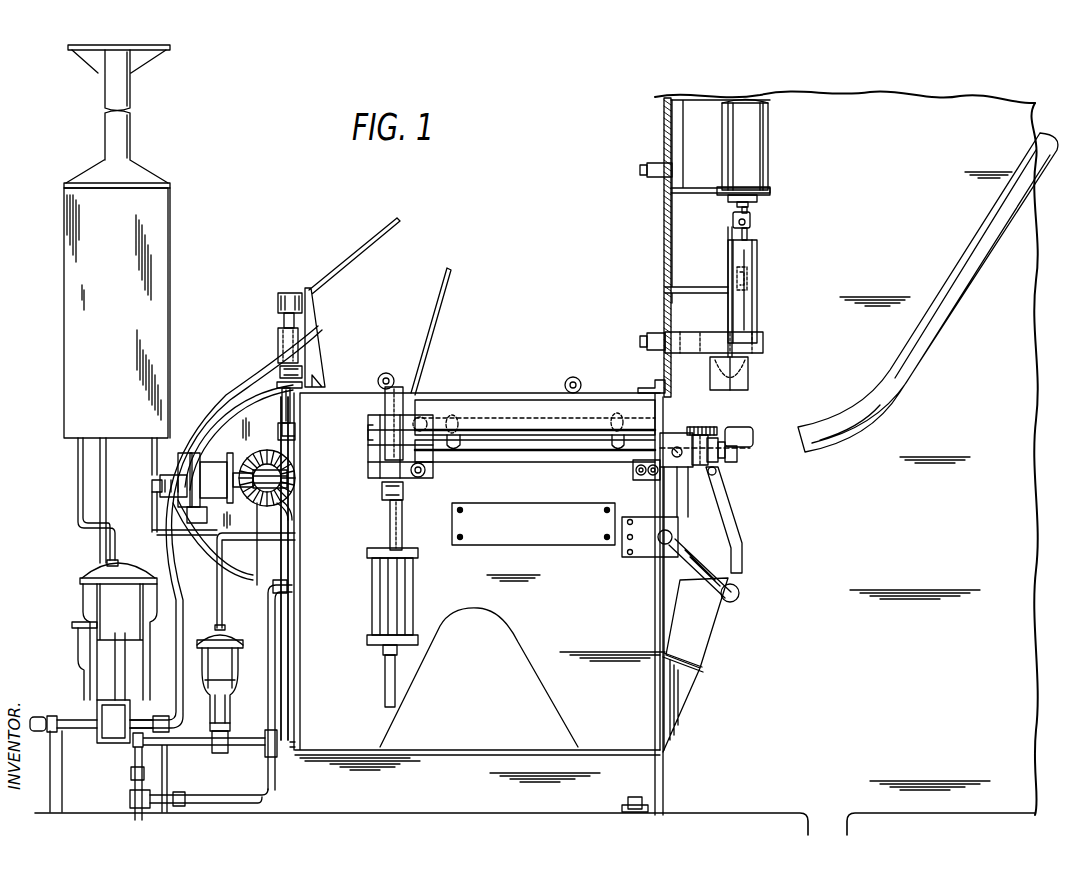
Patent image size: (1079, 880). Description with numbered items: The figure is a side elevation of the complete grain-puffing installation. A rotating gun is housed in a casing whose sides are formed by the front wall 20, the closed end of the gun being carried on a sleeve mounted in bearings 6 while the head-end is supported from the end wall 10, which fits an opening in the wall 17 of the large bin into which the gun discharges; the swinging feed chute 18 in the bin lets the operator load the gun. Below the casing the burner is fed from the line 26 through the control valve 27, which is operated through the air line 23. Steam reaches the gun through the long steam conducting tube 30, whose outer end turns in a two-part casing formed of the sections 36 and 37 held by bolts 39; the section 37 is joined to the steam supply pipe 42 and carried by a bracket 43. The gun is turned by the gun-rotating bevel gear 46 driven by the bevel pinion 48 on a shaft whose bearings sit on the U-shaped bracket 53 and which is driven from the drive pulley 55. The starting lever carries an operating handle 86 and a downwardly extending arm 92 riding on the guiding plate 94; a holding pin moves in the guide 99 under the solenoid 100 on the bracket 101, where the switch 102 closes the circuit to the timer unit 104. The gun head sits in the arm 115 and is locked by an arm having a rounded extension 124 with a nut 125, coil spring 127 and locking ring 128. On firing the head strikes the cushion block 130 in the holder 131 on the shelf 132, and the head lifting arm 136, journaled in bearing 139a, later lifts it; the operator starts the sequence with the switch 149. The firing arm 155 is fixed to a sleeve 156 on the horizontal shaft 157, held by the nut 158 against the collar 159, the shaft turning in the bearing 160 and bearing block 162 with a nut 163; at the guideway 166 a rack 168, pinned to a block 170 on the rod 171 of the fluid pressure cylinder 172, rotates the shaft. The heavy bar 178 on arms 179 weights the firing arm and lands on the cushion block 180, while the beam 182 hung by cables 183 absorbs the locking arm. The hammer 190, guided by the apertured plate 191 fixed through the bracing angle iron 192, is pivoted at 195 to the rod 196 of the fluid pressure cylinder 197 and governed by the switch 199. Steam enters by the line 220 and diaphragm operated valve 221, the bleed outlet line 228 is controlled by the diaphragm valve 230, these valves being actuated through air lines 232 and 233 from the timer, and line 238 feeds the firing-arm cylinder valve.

The bearings 6 is at (398, 380).
The end wall 10 is at (650, 382).
The wall of the large bin 17 is at (664, 127).
The swinging feed chute 18 is at (958, 254).
The front wall 20 is at (530, 644).
The air line 23 is at (152, 453).
The line 26 is at (279, 689).
The control valve 27 is at (232, 634).
The steam conducting tube 30 is at (286, 481).
The casing section 36 is at (236, 461).
The casing section 37 is at (215, 452).
The bolts 39 is at (210, 458).
The steam supply pipe 42 is at (160, 481).
The bracket 43 is at (296, 540).
The gun-rotating bevel gear 46 is at (293, 470).
The bevel pinion 48 is at (288, 519).
The U-shaped bracket 53 is at (281, 566).
The drive pulley 55 is at (250, 558).
The operating handle 86 is at (303, 386).
The downwardly extending arm 92 is at (293, 405).
The guiding plate 94 is at (296, 430).
The guide 99 is at (300, 335).
The solenoid 100 is at (280, 302).
The bracket 101 is at (316, 318).
The switch 102 is at (303, 366).
The timer unit 104 is at (64, 349).
The arm 115 is at (670, 491).
The rounded extension 124 is at (708, 430).
The nut 125 is at (748, 426).
The coil spring 127 is at (704, 426).
The locking ring 128 is at (683, 428).
The cushion block 130 is at (733, 572).
The holder 131 is at (710, 626).
The shelf 132 is at (699, 677).
The head lifting arm 136 is at (740, 592).
The bearing 139a is at (653, 549).
The switch 149 is at (641, 800).
The firing arm 155 is at (742, 545).
The sleeve 156 is at (716, 477).
The horizontal shaft 157 is at (588, 461).
The nut 158 is at (737, 463).
The collar 159 is at (686, 488).
The bearing 160 is at (650, 478).
The bearing block 162 is at (434, 468).
The nut 163 is at (370, 466).
The guideway 166 is at (419, 478).
The rack 168 is at (410, 397).
The block 170 is at (382, 494).
The rod 171 is at (401, 524).
The fluid pressure cylinder 172 is at (406, 583).
The heavy bar 178 is at (537, 384).
The arms 179 is at (456, 443).
The cushion block 180 is at (550, 532).
The beam 182 is at (748, 380).
The cables 183 is at (728, 237).
The hammer 190 is at (758, 252).
The apertured plate 191 is at (765, 340).
The bracing angle iron 192 is at (658, 330).
The pivot 195 is at (752, 221).
The rod 196 is at (757, 201).
The fluid pressure cylinder 197 is at (752, 128).
The switch 199 is at (748, 274).
The line 220 is at (80, 714).
The diaphragm operated valve 221 is at (77, 648).
The outlet line 228 is at (170, 782).
The diaphragm valve 230 is at (93, 606).
The air line 232 is at (100, 548).
The air line 233 is at (79, 497).
The line 238 is at (395, 693).